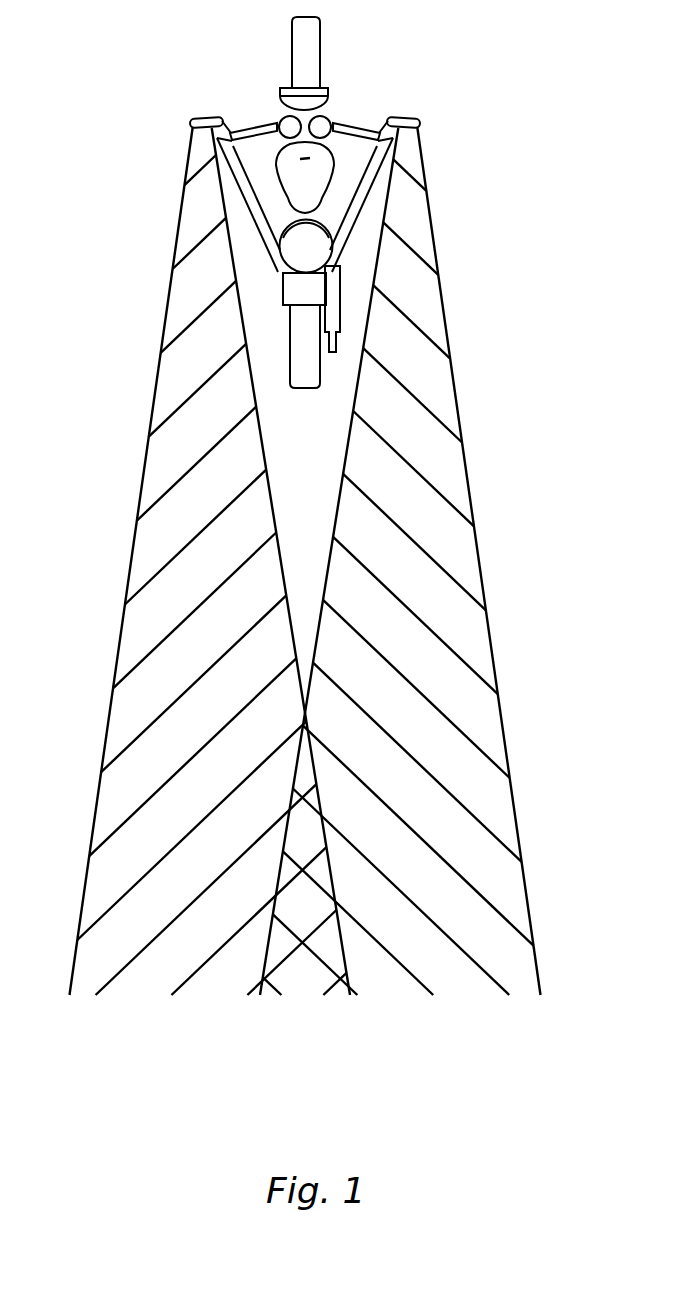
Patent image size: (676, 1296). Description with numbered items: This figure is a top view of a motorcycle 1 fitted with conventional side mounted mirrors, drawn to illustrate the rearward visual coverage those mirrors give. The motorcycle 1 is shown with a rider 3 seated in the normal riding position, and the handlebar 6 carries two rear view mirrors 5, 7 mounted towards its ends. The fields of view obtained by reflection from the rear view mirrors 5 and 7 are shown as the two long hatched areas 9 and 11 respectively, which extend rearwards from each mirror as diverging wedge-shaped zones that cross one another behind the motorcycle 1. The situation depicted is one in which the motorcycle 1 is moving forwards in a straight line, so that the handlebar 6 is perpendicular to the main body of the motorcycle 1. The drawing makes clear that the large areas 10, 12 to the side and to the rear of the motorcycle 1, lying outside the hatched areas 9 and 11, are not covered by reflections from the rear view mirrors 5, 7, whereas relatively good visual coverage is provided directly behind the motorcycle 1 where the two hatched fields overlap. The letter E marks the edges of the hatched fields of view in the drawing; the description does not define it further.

The motorcycle 1 is at (400, 86).
The rider 3 is at (350, 230).
The rear view mirror 5 is at (406, 116).
The handlebar 6 is at (260, 124).
The rear view mirror 7 is at (195, 115).
The hatched area 9 is at (437, 252).
The large area outside field of view 10 is at (72, 383).
The hatched area 11 is at (174, 253).
The large area outside field of view 12 is at (588, 383).
The hatched region E is at (150, 560).